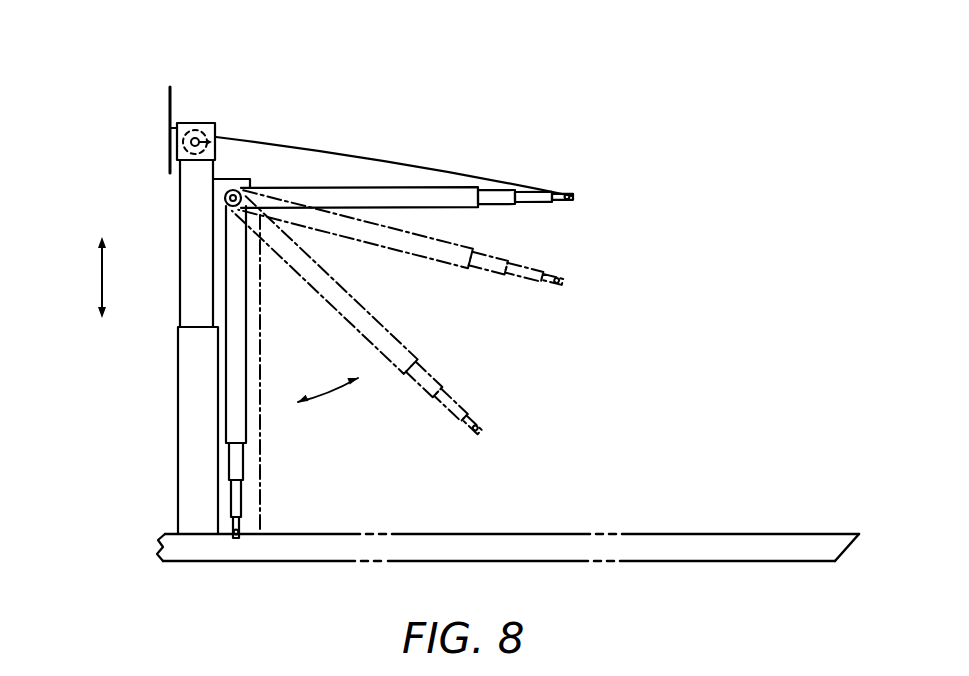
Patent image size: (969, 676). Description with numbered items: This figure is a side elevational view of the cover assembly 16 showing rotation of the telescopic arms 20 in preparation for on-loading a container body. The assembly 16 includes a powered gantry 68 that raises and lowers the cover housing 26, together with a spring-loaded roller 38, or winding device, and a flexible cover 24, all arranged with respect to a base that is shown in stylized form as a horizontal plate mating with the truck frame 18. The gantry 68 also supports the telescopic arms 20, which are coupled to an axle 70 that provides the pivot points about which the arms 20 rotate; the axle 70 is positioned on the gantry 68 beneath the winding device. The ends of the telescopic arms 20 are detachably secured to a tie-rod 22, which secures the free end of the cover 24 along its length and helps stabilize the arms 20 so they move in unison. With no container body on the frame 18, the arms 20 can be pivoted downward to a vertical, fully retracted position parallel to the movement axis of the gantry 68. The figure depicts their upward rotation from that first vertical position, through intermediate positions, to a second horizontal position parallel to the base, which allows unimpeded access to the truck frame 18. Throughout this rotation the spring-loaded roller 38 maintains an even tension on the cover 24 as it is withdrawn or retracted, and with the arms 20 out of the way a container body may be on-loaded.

The assembly 16 is at (142, 153).
The truck frame 18 is at (222, 547).
The telescopic arms 20 is at (256, 425).
The tie-rod 22 is at (578, 197).
The flexible cover 24 is at (352, 157).
The cover housing 26 is at (182, 123).
The spring-loaded roller 38 is at (216, 140).
The powered gantry 68 is at (176, 304).
The axle 70 is at (225, 198).